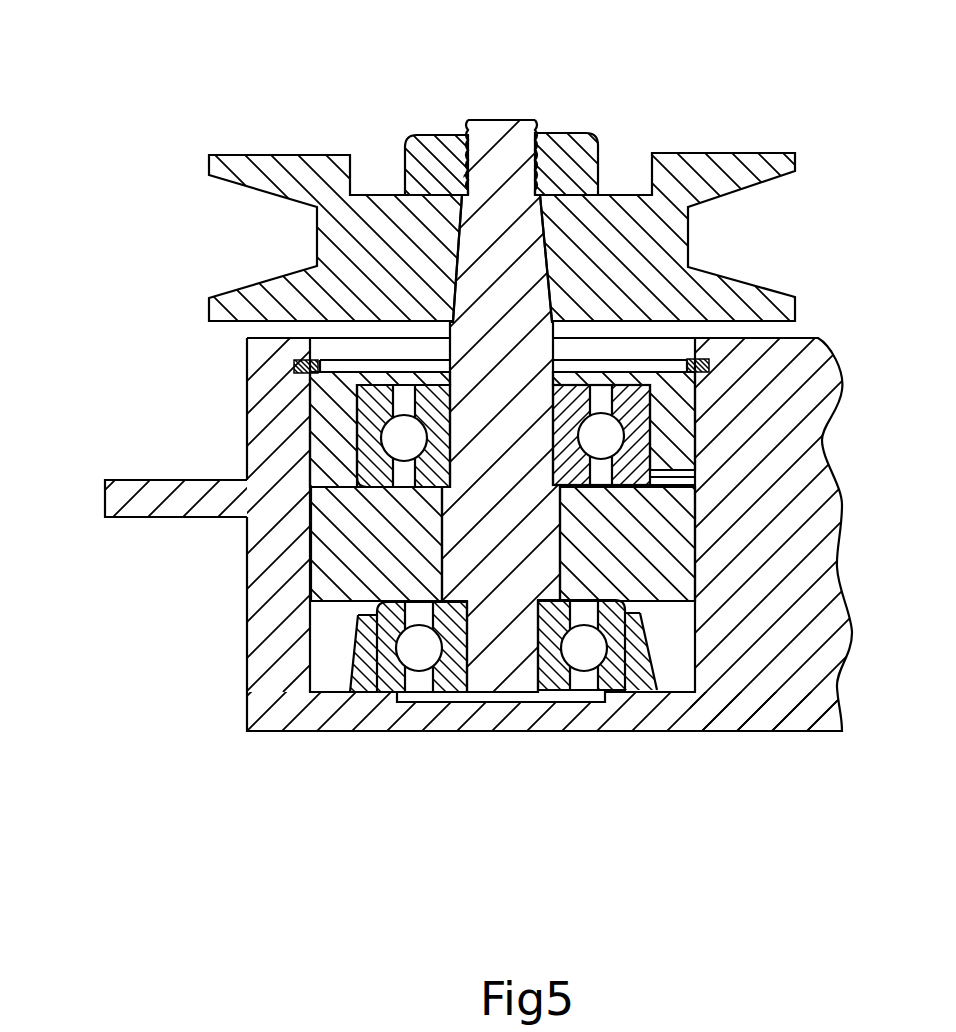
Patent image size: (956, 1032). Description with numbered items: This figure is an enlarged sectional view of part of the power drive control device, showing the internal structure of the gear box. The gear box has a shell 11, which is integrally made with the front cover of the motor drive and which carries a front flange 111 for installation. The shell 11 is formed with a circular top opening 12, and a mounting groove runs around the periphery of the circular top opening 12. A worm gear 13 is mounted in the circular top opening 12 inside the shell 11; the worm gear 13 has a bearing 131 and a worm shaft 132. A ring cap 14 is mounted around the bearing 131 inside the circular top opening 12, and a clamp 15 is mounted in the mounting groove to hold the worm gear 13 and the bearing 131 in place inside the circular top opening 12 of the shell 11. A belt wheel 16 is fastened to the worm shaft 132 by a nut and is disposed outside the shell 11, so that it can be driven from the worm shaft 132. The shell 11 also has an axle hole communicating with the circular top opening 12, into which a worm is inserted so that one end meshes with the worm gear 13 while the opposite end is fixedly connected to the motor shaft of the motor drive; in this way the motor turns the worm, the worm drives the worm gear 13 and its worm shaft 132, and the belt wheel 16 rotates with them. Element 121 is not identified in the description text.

The shell 11 is at (733, 731).
The front flange 111 is at (112, 485).
The circular top opening 12 is at (330, 673).
The key 121 is at (296, 358).
The worm gear 13 is at (330, 580).
The bearing 131 is at (368, 450).
The worm shaft 132 is at (500, 177).
The ring cap 14 is at (335, 425).
The clamp 15 is at (300, 362).
The belt wheel 16 is at (740, 190).